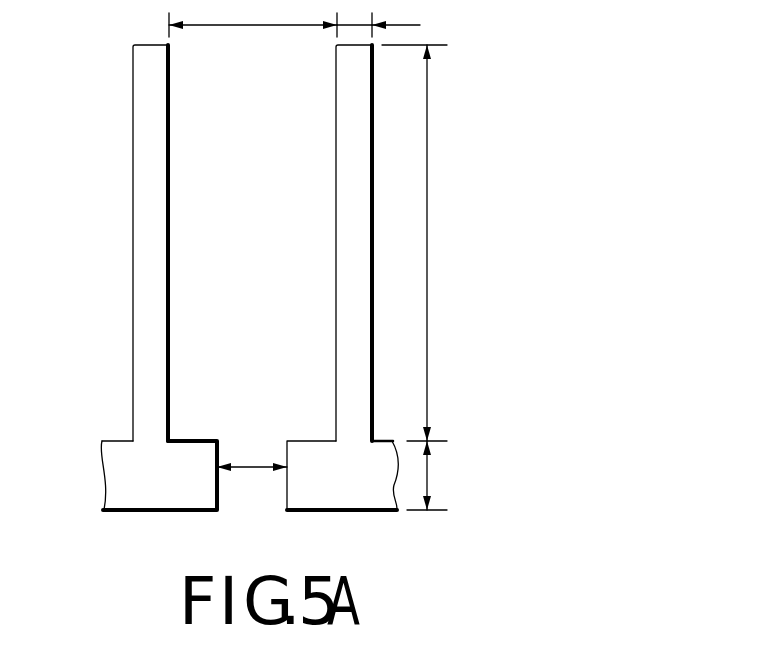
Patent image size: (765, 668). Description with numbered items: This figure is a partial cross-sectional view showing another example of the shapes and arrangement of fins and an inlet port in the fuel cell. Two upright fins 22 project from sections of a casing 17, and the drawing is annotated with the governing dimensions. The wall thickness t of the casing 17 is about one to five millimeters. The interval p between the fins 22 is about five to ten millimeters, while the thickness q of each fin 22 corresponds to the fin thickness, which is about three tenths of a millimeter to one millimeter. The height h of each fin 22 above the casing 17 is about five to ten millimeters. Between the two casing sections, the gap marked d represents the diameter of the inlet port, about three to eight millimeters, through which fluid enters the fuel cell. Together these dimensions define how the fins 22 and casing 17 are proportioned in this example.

The fin 22 is at (143, 242).
The casing 17 is at (122, 471).
The interval between fins p is at (253, 18).
The rib thickness dimension q is at (378, 18).
The height of the fin h is at (417, 243).
The wall thickness of casing t is at (429, 475).
The diameter of inlet port d is at (252, 493).